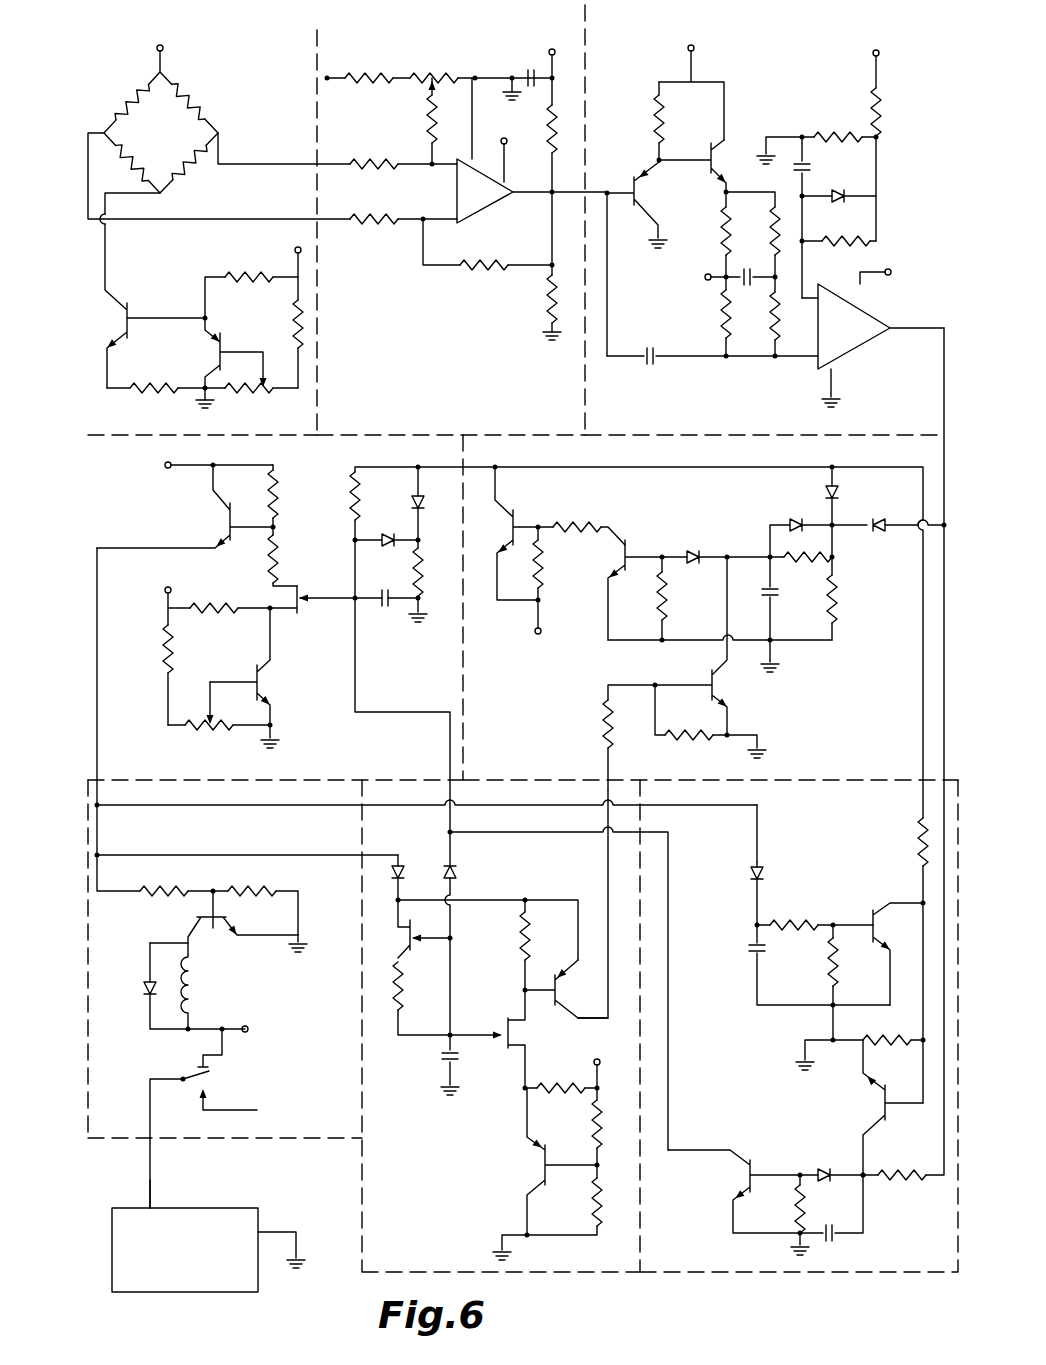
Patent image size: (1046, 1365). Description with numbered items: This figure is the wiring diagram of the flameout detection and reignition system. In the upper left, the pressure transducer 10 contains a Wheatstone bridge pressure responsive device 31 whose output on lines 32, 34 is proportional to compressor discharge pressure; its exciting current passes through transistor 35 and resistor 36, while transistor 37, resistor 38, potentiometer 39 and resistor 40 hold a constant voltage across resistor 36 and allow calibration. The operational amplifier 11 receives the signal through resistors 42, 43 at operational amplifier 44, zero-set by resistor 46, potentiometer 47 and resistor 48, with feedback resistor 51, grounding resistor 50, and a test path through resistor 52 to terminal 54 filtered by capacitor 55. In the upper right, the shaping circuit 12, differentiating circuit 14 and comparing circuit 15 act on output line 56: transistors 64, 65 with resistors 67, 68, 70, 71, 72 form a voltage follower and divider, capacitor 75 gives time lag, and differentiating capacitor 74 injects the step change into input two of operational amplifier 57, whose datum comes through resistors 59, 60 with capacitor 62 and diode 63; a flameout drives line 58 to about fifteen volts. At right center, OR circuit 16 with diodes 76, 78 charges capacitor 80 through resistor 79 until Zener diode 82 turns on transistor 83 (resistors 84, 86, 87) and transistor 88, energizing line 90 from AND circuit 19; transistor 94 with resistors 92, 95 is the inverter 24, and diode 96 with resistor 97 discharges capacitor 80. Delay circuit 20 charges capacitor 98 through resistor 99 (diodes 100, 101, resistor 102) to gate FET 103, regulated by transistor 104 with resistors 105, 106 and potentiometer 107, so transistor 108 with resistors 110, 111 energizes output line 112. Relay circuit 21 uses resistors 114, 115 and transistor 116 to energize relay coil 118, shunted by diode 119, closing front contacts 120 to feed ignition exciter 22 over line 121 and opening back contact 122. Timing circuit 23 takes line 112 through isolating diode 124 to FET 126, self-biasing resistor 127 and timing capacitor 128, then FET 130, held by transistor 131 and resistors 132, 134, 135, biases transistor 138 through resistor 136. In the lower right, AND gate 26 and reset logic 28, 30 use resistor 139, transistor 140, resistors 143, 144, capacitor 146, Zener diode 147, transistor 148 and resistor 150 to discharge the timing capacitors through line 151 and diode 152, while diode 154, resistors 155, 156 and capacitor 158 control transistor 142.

The pressure transducer 10 is at (134, 96).
The pressure responsive device 31 is at (192, 100).
The output line 32 is at (250, 163).
The output line 34 is at (233, 219).
The transistor 35 is at (121, 320).
The resistor 36 is at (163, 391).
The transistor 37 is at (217, 352).
The resistor 38 is at (252, 275).
The potentiometer 39 is at (260, 391).
The resistor 40 is at (293, 342).
The operational amplifier 11 is at (422, 338).
The resistor 42 is at (372, 160).
The resistor 43 is at (388, 217).
The operational amplifier 44 is at (490, 208).
The resistor 46 is at (370, 75).
The potentiometer 47 is at (435, 75).
The resistor 48 is at (426, 130).
The resistor 50 is at (546, 302).
The feedback resistor 51 is at (482, 270).
The resistor 52 is at (548, 138).
The external terminal 54 is at (555, 48).
The capacitor 55 is at (527, 72).
The shaping circuit 12 is at (733, 102).
The differentiating circuit 14 is at (690, 372).
The comparing circuit 15 is at (825, 98).
The output line 56 is at (610, 336).
The operational amplifier 57 is at (852, 347).
The output line 58 is at (940, 394).
The resistor 59 is at (879, 137).
The impedance matching resistor 60 is at (866, 241).
The capacitor 62 is at (799, 160).
The diode 63 is at (837, 188).
The transistor 64 is at (642, 194).
The transistor 65 is at (709, 152).
The resistor 67 is at (656, 110).
The resistor 68 is at (720, 240).
The resistor 70 is at (770, 232).
The resistor 71 is at (770, 320).
The resistor 72 is at (720, 316).
The differentiating capacitor 74 is at (647, 368).
The capacitor 75 is at (750, 269).
The OR circuit 16 is at (858, 510).
The AND circuit 19 is at (578, 678).
The delay circuit 20 is at (160, 530).
The inverter 24 is at (777, 708).
The reset logic circuit 28 is at (736, 528).
The diode 76 is at (875, 535).
The diode 78 is at (823, 490).
The resistor 79 is at (800, 565).
The capacitor 80 is at (766, 600).
The Zener diode 82 is at (690, 551).
The transistor 83 is at (615, 558).
The resistor 84 is at (668, 602).
The resistor 86 is at (545, 570).
The resistor 87 is at (572, 524).
The transistor 88 is at (504, 535).
The line 90 is at (576, 468).
The resistor 92 is at (600, 726).
The transistor 94 is at (708, 684).
The resistor 95 is at (688, 740).
The diode 96 is at (793, 519).
The resistor 97 is at (842, 615).
The capacitor 98 is at (383, 615).
The resistor 99 is at (348, 495).
The diode 100 is at (386, 548).
The diode 101 is at (410, 500).
The resistor 102 is at (425, 585).
The field effect transistor 103 is at (302, 614).
The transistor 104 is at (264, 690).
The resistor 105 is at (208, 604).
The resistor 106 is at (160, 665).
The time delay adjusting potentiometer 107 is at (210, 740).
The transistor 108 is at (226, 530).
The resistor 110 is at (282, 495).
The resistor 111 is at (282, 566).
The output line 112 is at (97, 750).
The transistor and relay circuit 21 is at (162, 935).
The ignition exciter 22 is at (248, 1206).
The timing circuit 23 is at (458, 1163).
The AND gate 26 is at (884, 1200).
The reset logic circuit 30 is at (822, 852).
The resistor 114 is at (165, 889).
The resistor 115 is at (256, 889).
The transistor 116 is at (213, 930).
The ignition relay coil 118 is at (197, 975).
The diode 119 is at (143, 988).
The front contacts 120 is at (197, 1071).
The line 121 is at (152, 1182).
The back contact 122 is at (257, 1110).
The isolating diode 124 is at (420, 850).
The field effect transistor 126 is at (412, 950).
The self-biasing resistor 127 is at (398, 1036).
The timing capacitor 128 is at (440, 1068).
The field effect transistor 130 is at (530, 1037).
The transistor 131 is at (540, 1166).
The resistor 132 is at (573, 1078).
The resistor 134 is at (592, 1136).
The resistor 135 is at (590, 1208).
The resistor 136 is at (520, 950).
The transistor 138 is at (580, 995).
The resistor 139 is at (900, 1170).
The transistor 140 is at (882, 1103).
The transistor 142 is at (872, 916).
The resistor 143 is at (914, 860).
The resistor 144 is at (904, 1037).
The capacitor 146 is at (835, 1240).
The Zener diode 147 is at (826, 1168).
The transistor 148 is at (747, 1178).
The resistor 150 is at (795, 1205).
The line 151 is at (372, 712).
The diode 152 is at (457, 873).
The diode 154 is at (752, 876).
The resistor 155 is at (790, 915).
The resistor 156 is at (830, 965).
The capacitor 158 is at (752, 958).